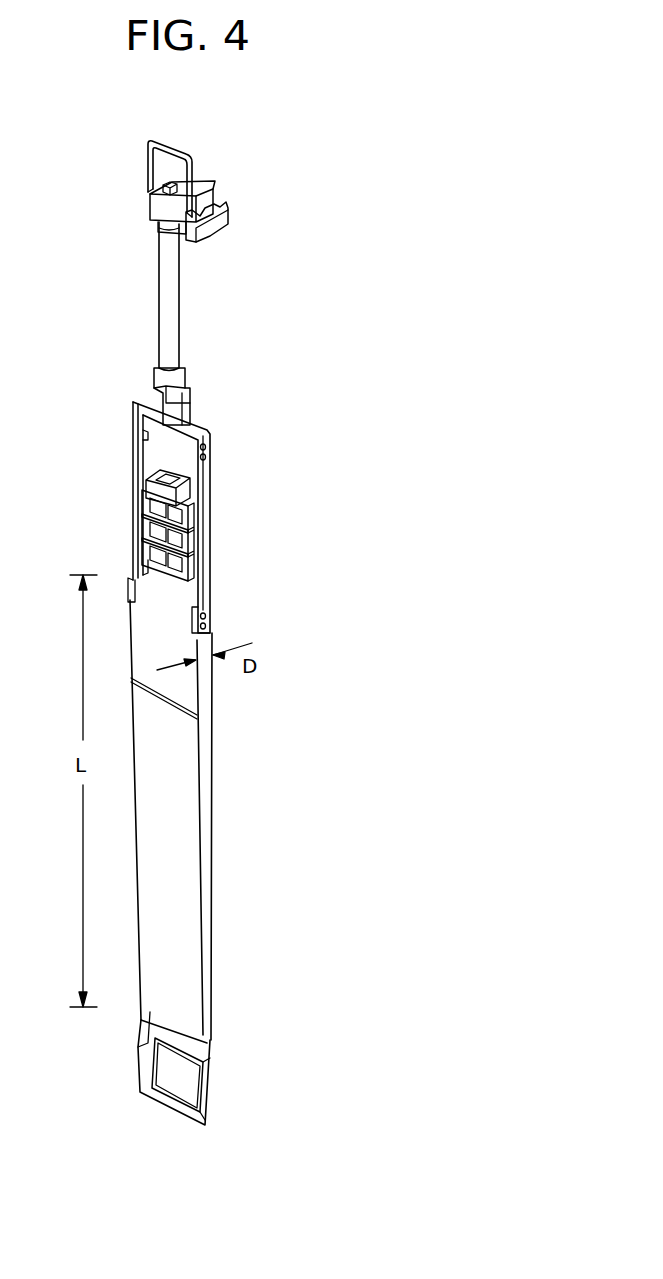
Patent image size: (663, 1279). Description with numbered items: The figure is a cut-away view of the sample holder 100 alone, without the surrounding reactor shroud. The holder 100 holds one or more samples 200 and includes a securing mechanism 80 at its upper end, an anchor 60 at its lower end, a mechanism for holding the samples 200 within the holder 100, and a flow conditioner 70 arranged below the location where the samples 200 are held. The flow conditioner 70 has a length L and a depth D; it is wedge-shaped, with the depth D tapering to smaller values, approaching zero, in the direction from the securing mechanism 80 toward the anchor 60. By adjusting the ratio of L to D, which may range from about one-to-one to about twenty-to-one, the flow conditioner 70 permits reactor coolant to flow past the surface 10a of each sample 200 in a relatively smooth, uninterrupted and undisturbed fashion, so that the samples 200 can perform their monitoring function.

The securing mechanism 80 is at (216, 184).
The holder 100 is at (182, 517).
The sample 200 is at (194, 514).
The surface of the sample 10a is at (160, 592).
The flow conditioner 70 is at (167, 828).
The anchor 60 is at (212, 1048).